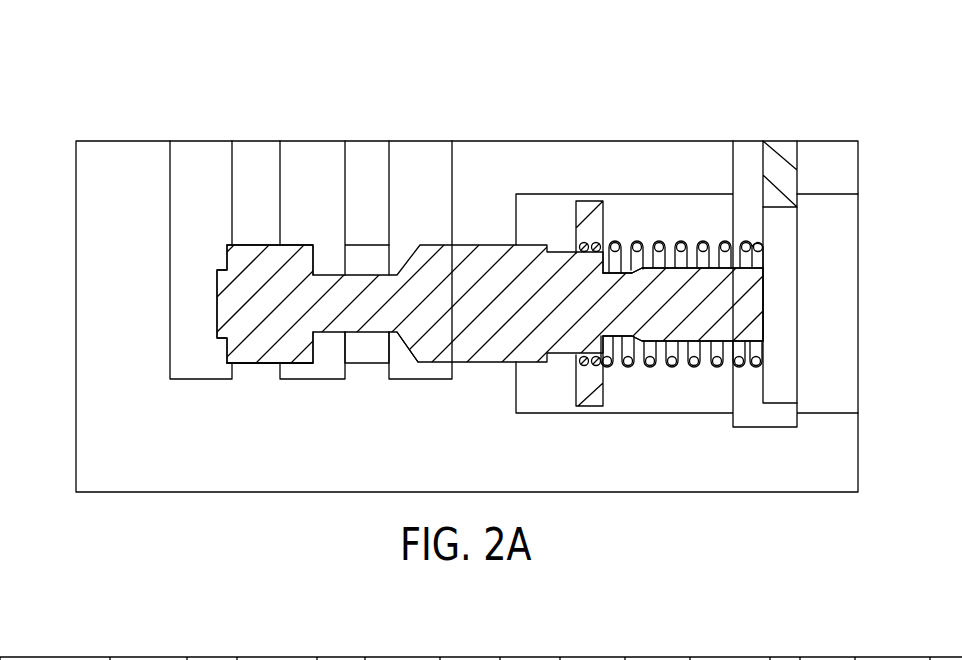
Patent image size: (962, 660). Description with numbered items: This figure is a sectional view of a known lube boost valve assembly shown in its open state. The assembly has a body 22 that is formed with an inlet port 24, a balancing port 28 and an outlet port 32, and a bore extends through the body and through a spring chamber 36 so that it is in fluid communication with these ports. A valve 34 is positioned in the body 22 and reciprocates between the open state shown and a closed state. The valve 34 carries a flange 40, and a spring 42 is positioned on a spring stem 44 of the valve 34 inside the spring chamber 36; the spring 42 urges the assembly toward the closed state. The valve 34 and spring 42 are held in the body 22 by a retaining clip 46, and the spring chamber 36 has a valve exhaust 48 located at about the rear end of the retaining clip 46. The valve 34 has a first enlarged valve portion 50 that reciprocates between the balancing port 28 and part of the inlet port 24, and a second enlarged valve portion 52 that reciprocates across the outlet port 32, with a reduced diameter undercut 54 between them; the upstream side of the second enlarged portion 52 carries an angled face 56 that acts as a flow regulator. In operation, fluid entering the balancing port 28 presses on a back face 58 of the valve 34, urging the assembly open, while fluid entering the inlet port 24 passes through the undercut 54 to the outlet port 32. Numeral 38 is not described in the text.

The body 22 is at (781, 121).
The inlet port 24 is at (313, 147).
The balancing port 28 is at (205, 146).
The outlet port 32 is at (425, 147).
The valve 34 is at (480, 245).
The spring chamber 36 is at (728, 230).
The head portion of valve member 38 is at (214, 252).
The flange 40 is at (592, 199).
The spring 42 is at (658, 240).
The spring stem 44 is at (678, 365).
The retaining clip 46 is at (792, 154).
The valve exhaust 48 is at (792, 305).
The first enlarged valve portion 50 is at (260, 347).
The second enlarged valve portion 52 is at (483, 363).
The undercut 54 is at (375, 333).
The angled face 56 is at (413, 345).
The back face 58 is at (215, 302).